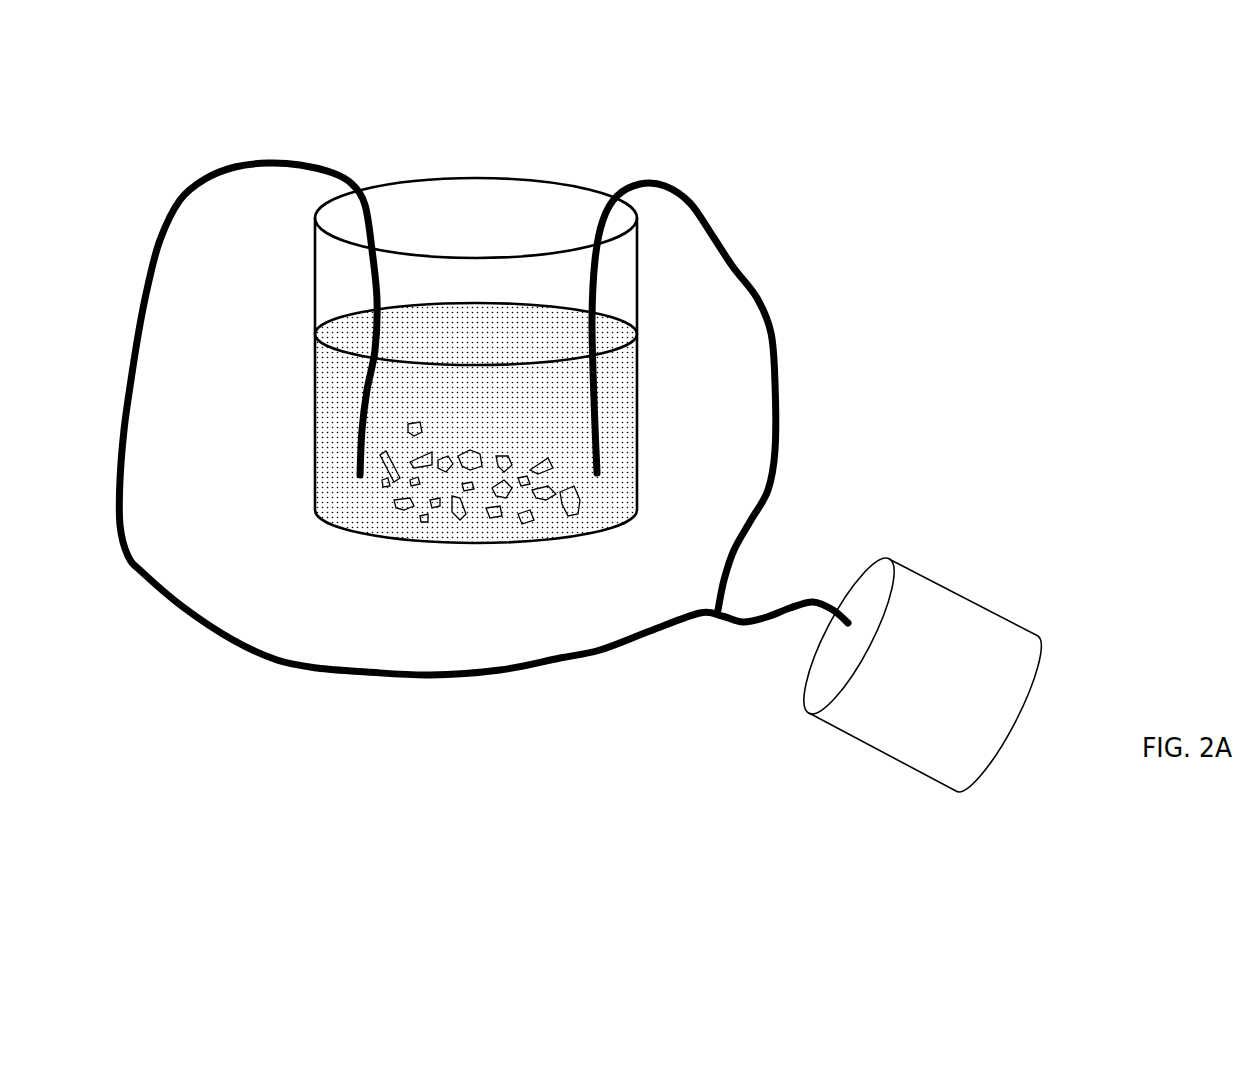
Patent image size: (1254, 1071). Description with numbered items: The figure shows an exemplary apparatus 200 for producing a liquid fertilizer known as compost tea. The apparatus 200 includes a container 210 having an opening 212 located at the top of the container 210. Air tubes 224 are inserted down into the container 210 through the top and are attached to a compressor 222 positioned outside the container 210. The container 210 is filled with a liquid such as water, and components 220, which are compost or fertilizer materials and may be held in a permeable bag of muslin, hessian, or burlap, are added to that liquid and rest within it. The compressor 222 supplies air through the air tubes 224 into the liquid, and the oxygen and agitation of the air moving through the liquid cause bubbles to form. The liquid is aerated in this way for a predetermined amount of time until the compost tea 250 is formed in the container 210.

The apparatus 200 is at (272, 104).
The container 210 is at (421, 380).
The opening 212 is at (567, 174).
The components 220 is at (481, 534).
The compressor 222 is at (894, 670).
The air tubes 224 is at (488, 419).
The compost tea 250 is at (332, 446).